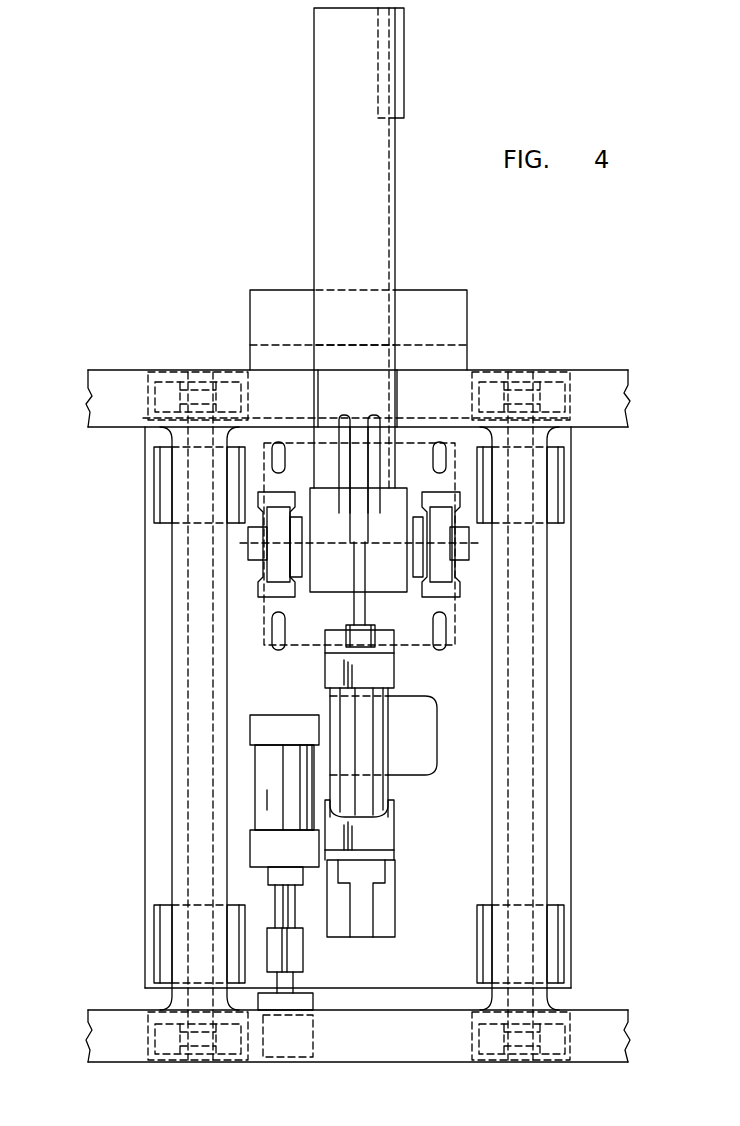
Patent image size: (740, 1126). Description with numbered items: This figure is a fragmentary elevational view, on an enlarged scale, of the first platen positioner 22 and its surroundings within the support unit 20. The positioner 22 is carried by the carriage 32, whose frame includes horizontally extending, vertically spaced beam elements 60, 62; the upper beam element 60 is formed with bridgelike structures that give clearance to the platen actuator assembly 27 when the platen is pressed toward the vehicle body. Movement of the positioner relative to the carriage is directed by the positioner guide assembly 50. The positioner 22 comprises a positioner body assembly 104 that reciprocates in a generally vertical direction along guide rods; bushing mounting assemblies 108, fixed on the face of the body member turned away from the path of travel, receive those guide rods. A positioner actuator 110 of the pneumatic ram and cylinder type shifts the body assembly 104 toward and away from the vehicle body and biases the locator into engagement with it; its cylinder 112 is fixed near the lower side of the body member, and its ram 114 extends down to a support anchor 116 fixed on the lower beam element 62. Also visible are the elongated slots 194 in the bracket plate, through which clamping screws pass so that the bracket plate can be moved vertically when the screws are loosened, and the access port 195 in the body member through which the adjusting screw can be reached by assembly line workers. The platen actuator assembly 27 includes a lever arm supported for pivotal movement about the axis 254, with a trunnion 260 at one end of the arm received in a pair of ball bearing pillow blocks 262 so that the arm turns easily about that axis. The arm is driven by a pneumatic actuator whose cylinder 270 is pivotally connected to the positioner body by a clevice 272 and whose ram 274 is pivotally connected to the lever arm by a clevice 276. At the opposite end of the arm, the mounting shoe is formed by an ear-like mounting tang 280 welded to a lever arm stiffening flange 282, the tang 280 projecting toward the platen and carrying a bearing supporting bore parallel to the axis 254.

The support unit 20 is at (636, 400).
The first platen positioner 22 is at (145, 805).
The platen actuator assembly 27 is at (390, 785).
The carriage 32 is at (88, 396).
The positioner guide assembly 50 is at (535, 675).
The upper beam element 60 is at (607, 370).
The lower beam element 62 is at (118, 1030).
The positioner body assembly 104 is at (145, 645).
The bushing mounting assemblies 108 is at (160, 928).
The positioner actuator 110 is at (278, 765).
The cylinder 112 is at (302, 745).
The ram 114 is at (297, 918).
The support anchor 116 is at (313, 1000).
The elongated slots 194 is at (445, 462).
The access port 195 is at (430, 752).
The axis 254 is at (248, 542).
The trunnion 260 is at (268, 560).
The ball bearing pillow blocks 262 is at (258, 495).
The cylinder 270 is at (395, 830).
The clevice 272 is at (387, 910).
The ram 274 is at (375, 628).
The clevice 276 is at (358, 482).
The mounting tang 280 is at (398, 45).
The lever arm stiffening flange 282 is at (314, 26).